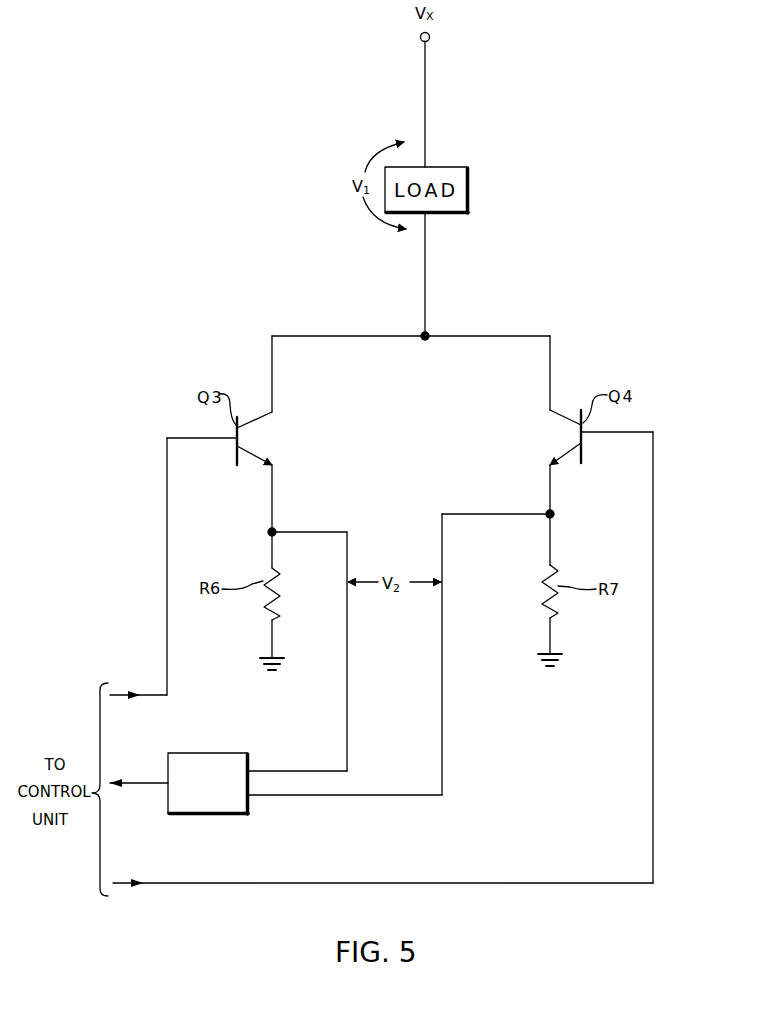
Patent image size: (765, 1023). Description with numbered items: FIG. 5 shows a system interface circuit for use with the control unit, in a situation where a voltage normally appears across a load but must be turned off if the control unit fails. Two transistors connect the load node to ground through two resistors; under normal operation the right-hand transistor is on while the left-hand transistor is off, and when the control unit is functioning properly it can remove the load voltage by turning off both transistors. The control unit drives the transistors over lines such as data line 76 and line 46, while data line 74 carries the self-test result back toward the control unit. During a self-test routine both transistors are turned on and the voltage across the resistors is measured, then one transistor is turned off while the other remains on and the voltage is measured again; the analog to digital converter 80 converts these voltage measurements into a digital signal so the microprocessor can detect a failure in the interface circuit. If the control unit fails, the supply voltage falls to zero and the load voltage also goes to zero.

The control line to base of transistor Q4 46 is at (183, 884).
The data line 74 is at (141, 786).
The data line 76 is at (167, 648).
The analog to digital converter 80 is at (233, 814).